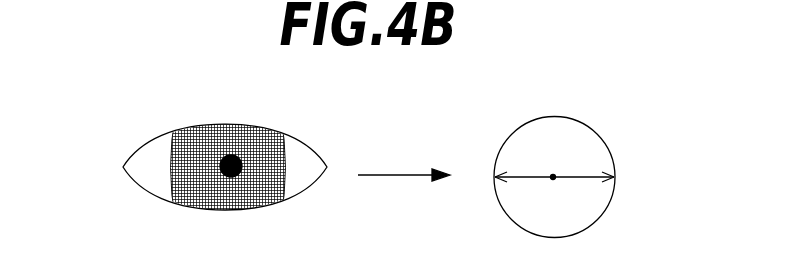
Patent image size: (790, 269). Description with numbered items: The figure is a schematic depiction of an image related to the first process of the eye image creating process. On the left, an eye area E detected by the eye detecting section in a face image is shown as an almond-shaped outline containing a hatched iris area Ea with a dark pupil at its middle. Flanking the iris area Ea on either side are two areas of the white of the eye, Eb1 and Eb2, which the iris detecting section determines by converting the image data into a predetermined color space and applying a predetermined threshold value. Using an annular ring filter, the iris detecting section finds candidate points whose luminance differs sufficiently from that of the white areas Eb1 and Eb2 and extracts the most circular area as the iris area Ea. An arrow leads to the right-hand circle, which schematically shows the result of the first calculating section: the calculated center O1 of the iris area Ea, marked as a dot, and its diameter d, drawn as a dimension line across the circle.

The eye area E is at (234, 148).
The iris area Ea is at (236, 117).
The area of the white of the eye Eb1 is at (152, 165).
The area of the white of the eye Eb2 is at (315, 190).
The diameter of the iris area d is at (554, 165).
The center of the iris area O1 is at (553, 192).